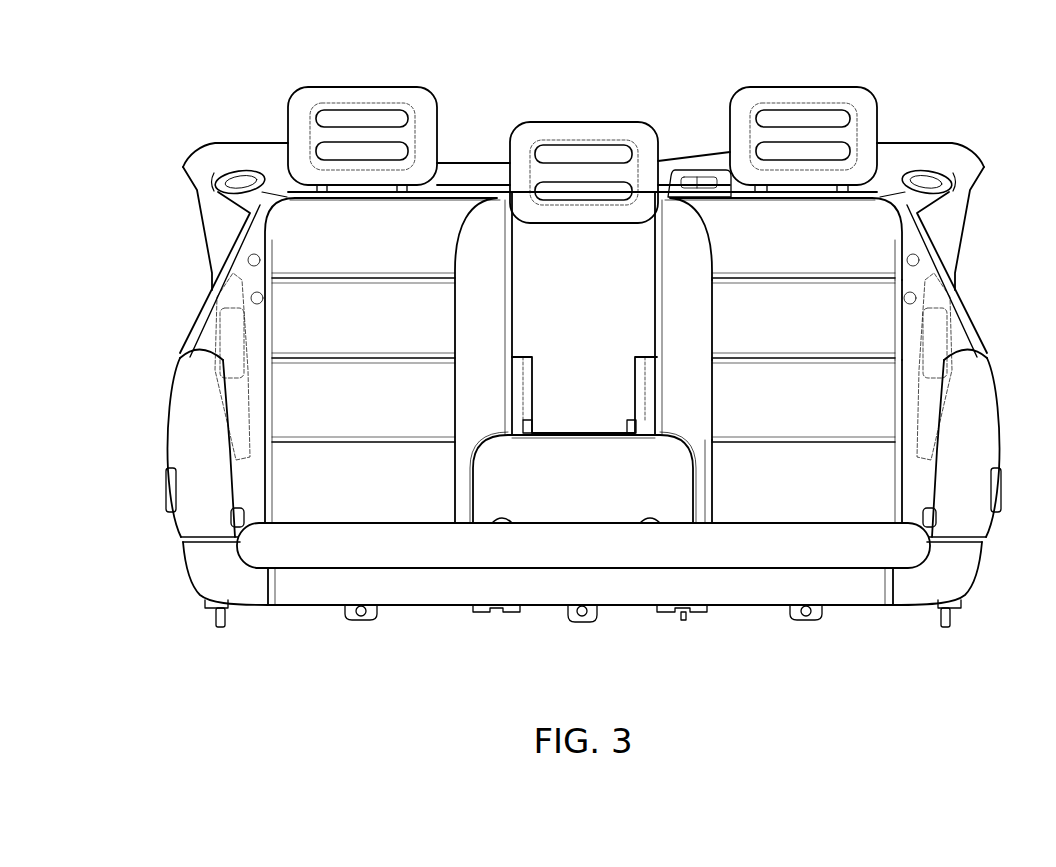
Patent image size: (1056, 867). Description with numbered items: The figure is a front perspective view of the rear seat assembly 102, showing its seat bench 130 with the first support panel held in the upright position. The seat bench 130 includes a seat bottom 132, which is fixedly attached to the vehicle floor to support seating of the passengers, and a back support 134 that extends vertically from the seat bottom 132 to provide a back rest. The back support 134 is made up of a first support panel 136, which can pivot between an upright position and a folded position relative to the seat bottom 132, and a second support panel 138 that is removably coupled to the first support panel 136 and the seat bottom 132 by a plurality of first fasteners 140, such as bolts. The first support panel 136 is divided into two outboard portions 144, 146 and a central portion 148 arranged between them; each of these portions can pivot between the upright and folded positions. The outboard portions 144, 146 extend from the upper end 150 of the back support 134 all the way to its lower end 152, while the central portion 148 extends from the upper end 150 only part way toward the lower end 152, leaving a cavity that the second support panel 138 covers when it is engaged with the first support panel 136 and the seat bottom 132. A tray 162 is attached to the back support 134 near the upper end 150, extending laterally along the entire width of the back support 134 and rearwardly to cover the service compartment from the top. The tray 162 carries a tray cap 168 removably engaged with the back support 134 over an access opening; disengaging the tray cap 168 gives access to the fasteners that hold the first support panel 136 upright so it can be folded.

The rear seat assembly 102 is at (902, 73).
The seat bench 130 is at (859, 596).
The seat bottom 132 is at (282, 542).
The back support 134 is at (855, 227).
The first support panel 136 is at (845, 302).
The second support panel 138 is at (573, 498).
The first fasteners 140 is at (507, 523).
The outboard portion 144 is at (845, 380).
The outboard portion 146 is at (323, 310).
The central portion 148 is at (538, 258).
The upper end 150 is at (907, 187).
The lower end 152 is at (713, 523).
The tray 162 is at (257, 150).
The tray cap 168 is at (457, 177).